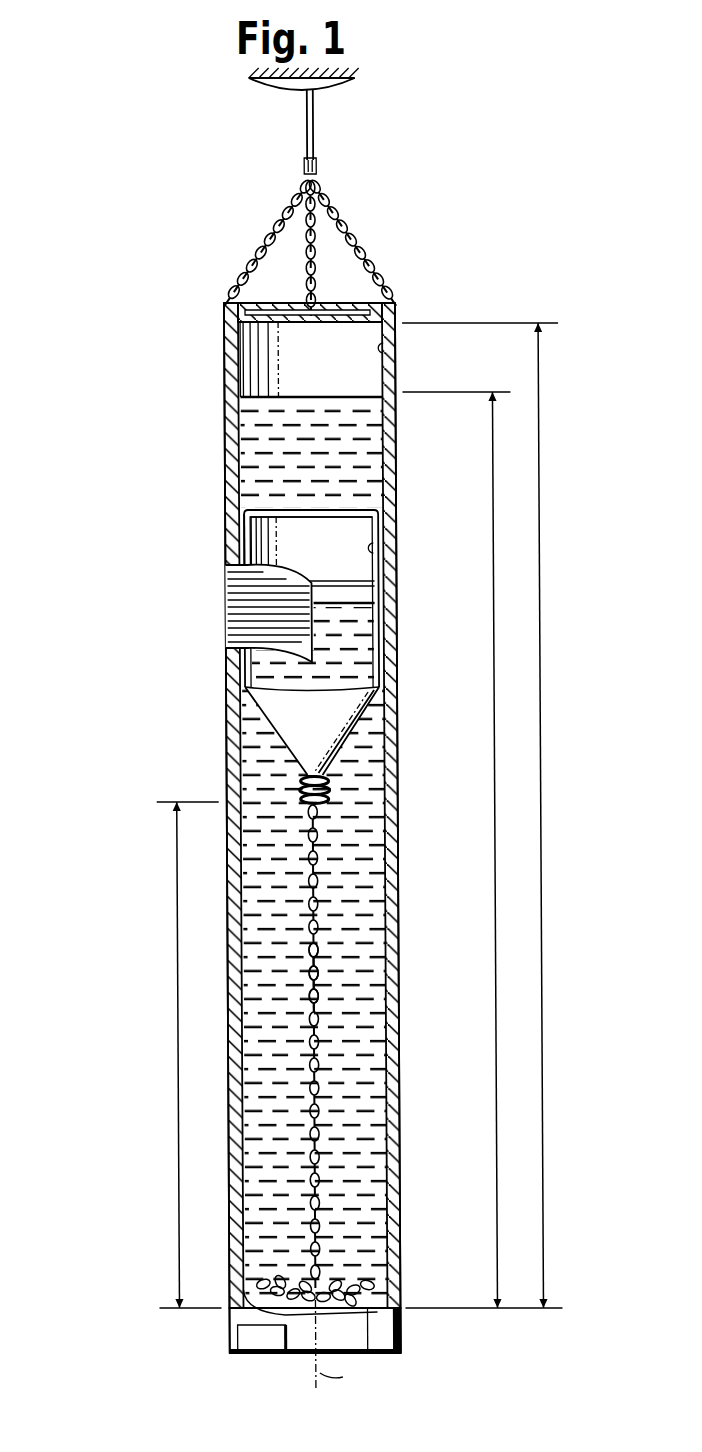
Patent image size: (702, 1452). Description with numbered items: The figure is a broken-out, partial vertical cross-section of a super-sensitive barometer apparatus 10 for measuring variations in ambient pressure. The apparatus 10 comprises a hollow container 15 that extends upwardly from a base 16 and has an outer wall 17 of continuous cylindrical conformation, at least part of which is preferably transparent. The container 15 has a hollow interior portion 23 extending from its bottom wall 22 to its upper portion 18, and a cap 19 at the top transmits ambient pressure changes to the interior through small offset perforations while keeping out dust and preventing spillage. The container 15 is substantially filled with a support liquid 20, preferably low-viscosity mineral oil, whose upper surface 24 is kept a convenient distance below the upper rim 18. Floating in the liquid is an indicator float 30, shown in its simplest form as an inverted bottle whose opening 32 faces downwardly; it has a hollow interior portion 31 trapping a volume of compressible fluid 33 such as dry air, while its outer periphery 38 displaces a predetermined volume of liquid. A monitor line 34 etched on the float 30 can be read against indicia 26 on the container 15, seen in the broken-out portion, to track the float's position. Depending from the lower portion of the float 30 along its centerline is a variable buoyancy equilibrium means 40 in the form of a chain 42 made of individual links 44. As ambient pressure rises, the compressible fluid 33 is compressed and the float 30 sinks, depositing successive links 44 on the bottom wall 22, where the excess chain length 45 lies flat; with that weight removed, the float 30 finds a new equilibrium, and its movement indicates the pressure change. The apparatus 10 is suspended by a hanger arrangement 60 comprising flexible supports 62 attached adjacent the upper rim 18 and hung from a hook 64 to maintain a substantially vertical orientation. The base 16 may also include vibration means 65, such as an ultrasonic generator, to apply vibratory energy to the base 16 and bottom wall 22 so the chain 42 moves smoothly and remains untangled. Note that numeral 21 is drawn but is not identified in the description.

The super-sensitive apparatus 10 is at (147, 563).
The hollow container 15 is at (398, 431).
The base 16 is at (372, 1335).
The outer wall 17 is at (396, 1017).
The upper portion 18 is at (229, 300).
The cap 19 is at (350, 303).
The support liquid 20 is at (343, 468).
The liquid in cup 21 is at (355, 628).
The bottom wall 22 is at (372, 1300).
The hollow interior portion 23 is at (388, 350).
The upper surface 24 is at (356, 397).
The indicia 26 is at (222, 589).
The indicator float 30 is at (381, 584).
The hollow interior portion 31 is at (366, 553).
The opening 32 is at (320, 806).
The compressible fluid 33 is at (340, 530).
The monitor line 34 is at (245, 566).
The outer periphery 38 is at (352, 714).
The variable buoyancy equilibrium means 40 is at (330, 887).
The chain 42 is at (318, 952).
The links 44 is at (318, 1003).
The excess chain length 45 is at (345, 1290).
The hanger arrangement 60 is at (262, 218).
The flexible supports 62 is at (348, 242).
The hook 64 is at (318, 143).
The vibration means 65 is at (232, 1335).